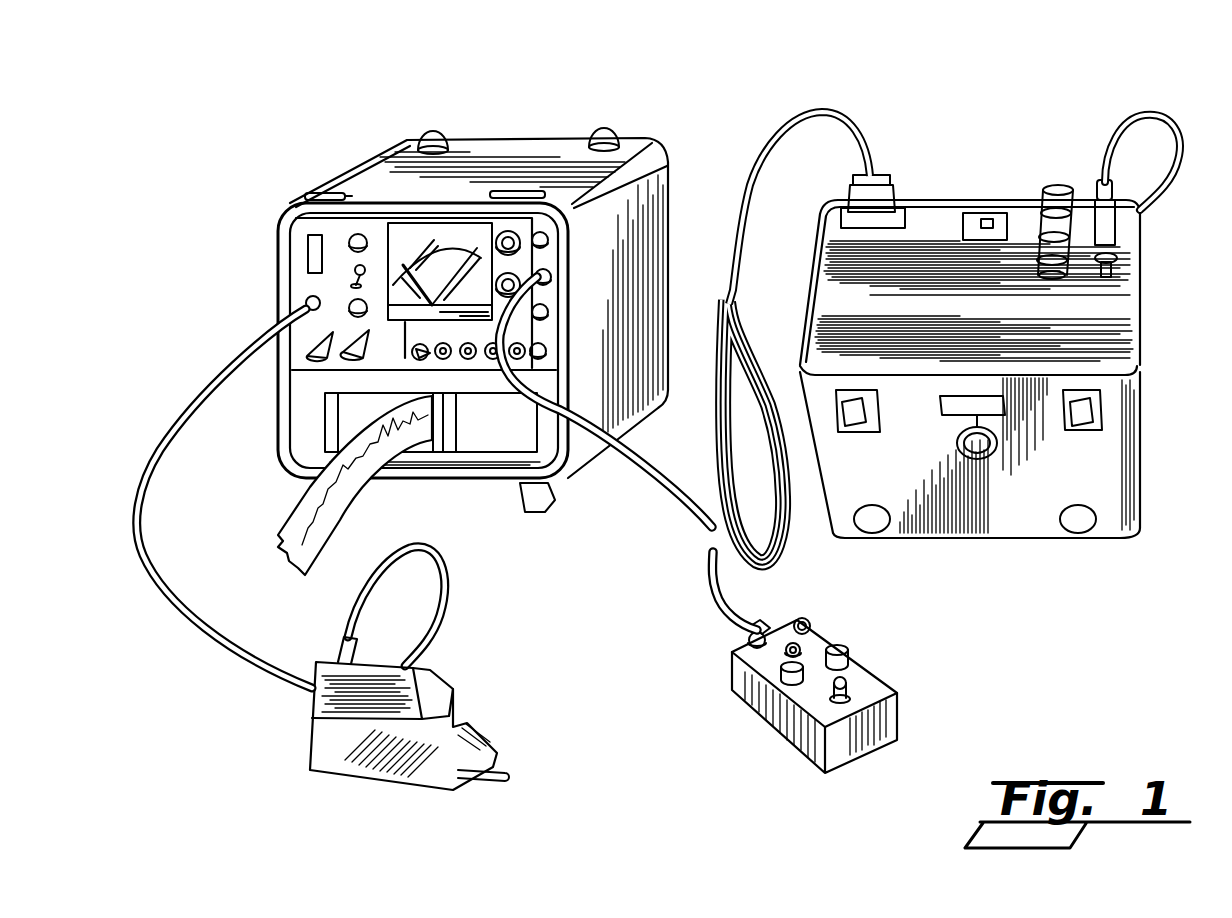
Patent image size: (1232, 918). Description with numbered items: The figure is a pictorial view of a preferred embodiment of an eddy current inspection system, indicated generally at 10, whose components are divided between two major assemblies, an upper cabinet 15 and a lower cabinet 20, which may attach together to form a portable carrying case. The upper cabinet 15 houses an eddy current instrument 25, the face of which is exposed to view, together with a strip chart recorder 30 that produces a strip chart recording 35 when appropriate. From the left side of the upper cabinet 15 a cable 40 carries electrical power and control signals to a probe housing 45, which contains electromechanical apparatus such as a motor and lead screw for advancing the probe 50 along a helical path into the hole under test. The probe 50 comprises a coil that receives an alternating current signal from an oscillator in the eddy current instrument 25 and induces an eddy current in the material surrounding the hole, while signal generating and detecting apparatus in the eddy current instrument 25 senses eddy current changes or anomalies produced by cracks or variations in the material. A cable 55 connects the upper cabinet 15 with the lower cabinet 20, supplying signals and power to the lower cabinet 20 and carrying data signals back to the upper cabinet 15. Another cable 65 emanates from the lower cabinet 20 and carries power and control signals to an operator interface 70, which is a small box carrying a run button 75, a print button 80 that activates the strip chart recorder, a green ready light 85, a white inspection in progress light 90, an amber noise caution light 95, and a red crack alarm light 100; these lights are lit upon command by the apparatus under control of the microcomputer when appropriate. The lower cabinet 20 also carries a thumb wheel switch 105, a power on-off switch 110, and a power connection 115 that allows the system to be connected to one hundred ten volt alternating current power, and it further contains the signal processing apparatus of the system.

The system 10 is at (724, 137).
The upper cabinet 15 is at (448, 325).
The lower cabinet 20 is at (1006, 339).
The eddy current instrument 25 is at (298, 268).
The strip chart recorder 30 is at (500, 440).
The strip chart recording 35 is at (378, 478).
The cable 40 is at (163, 463).
The probe housing 45 is at (400, 668).
The probe 50 is at (497, 773).
The cable 55 is at (706, 525).
The cable 65 is at (738, 600).
The operator interface 70 is at (815, 685).
The run button 75 is at (783, 687).
The print button 80 is at (848, 658).
The ready light 85 is at (748, 648).
The inspection in progress light 90 is at (806, 626).
The noise caution light 95 is at (855, 688).
The crack alarm light 100 is at (782, 672).
The thumb wheel switch 105 is at (972, 217).
The power on-off switch 110 is at (1117, 266).
The power connection 115 is at (1176, 135).